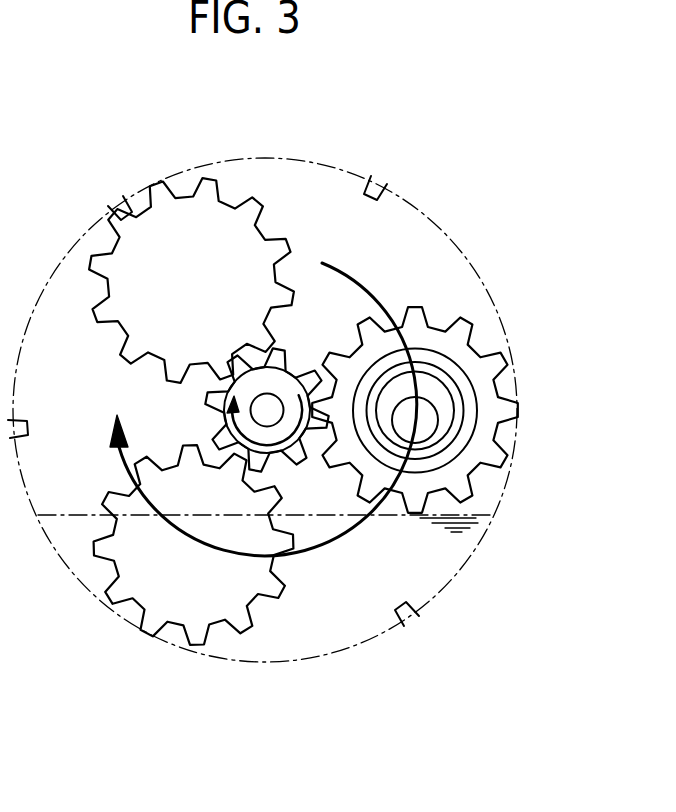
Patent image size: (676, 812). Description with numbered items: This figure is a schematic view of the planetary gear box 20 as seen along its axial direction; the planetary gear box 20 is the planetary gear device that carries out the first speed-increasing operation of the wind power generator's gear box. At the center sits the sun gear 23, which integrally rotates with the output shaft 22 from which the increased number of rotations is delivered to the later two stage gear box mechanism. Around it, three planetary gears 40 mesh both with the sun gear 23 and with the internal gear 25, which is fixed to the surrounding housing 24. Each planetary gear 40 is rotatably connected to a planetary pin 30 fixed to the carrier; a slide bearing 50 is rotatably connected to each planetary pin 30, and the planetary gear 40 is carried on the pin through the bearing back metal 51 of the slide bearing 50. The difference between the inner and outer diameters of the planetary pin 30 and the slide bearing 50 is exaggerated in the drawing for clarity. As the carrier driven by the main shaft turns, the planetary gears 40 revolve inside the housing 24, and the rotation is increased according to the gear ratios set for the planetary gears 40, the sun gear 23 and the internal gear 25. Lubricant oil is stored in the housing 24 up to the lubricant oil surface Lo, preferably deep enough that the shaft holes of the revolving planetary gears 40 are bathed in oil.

The planetary gear box 20 is at (499, 190).
The output shaft 22 is at (272, 400).
The sun gear 23 is at (228, 418).
The housing 24 is at (303, 157).
The internal gear 25 is at (379, 200).
The planetary pin 30 is at (427, 427).
The planetary gear 40 is at (182, 205).
The slide bearing 50 is at (448, 378).
The bearing back metal 51 is at (468, 411).
The lubricant oil surface Lo is at (65, 515).